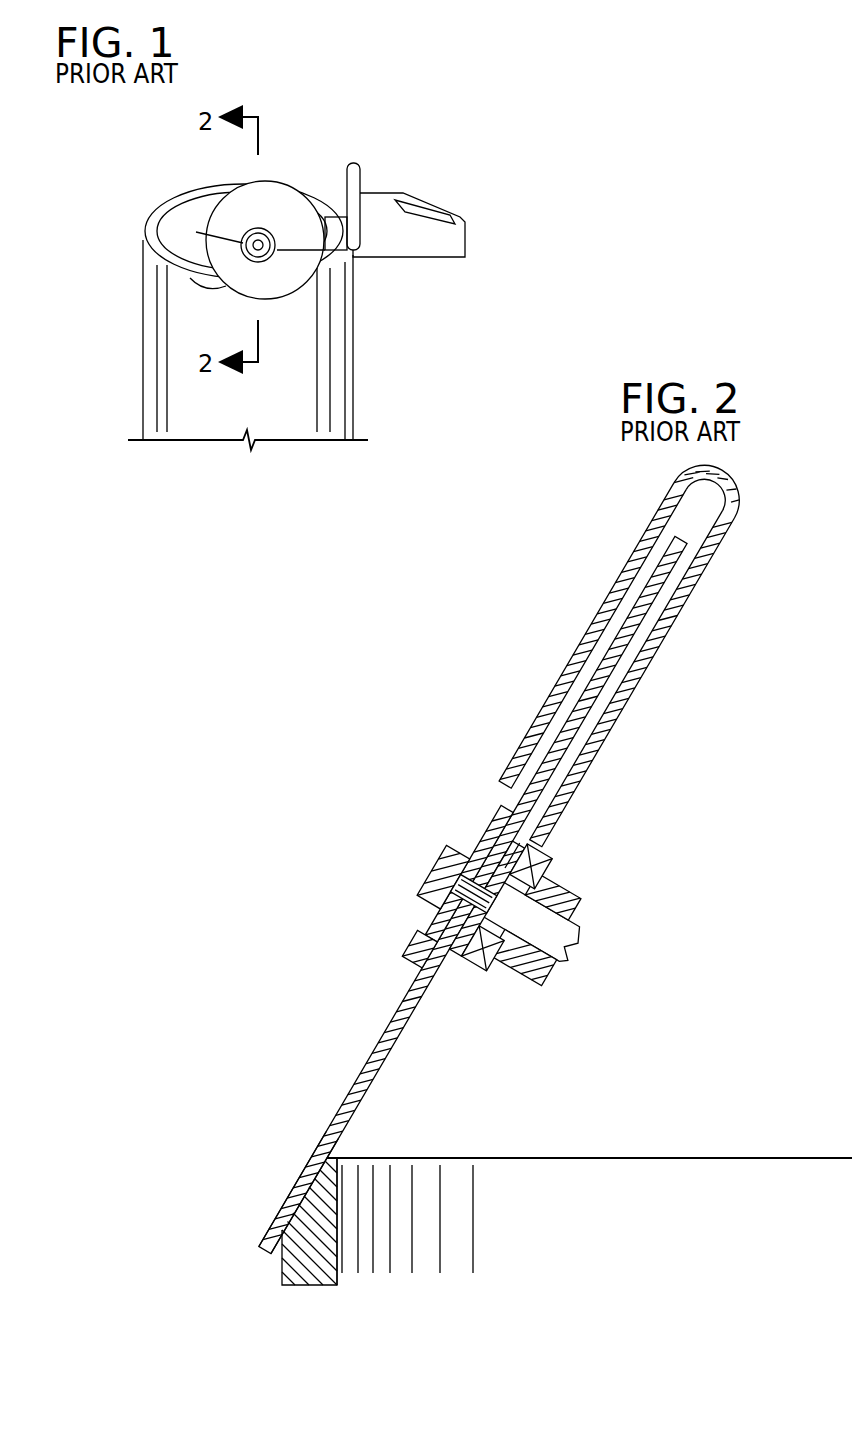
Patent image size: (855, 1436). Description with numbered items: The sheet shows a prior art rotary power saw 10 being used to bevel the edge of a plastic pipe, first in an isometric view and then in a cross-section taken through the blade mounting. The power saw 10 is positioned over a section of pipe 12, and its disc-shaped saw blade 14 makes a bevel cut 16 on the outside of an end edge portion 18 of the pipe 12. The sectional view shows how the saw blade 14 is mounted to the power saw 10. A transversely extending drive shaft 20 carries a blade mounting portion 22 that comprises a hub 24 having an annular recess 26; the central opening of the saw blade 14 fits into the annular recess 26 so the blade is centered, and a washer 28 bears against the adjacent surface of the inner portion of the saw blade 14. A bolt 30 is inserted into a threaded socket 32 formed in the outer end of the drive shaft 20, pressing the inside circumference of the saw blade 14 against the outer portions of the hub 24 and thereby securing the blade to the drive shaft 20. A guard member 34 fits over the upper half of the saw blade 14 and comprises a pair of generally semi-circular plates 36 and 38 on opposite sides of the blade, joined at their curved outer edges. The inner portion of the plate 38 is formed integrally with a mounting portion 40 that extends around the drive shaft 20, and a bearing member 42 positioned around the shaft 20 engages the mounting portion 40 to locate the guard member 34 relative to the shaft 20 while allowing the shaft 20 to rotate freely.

In FIG. 1, the rotary power saw 10 is at (419, 183).
In FIG. 1, the pipe 12 is at (338, 367).
In FIG. 2, the pipe 12 is at (450, 1160).
In FIG. 1, the saw blade 14 is at (282, 275).
In FIG. 2, the saw blade 14 is at (620, 650).
In FIG. 1, the bevel cut 16 is at (210, 282).
In FIG. 2, the bevel cut 16 is at (298, 1200).
In FIG. 1, the end edge portion 18 is at (155, 225).
In FIG. 2, the drive shaft 20 is at (572, 920).
In FIG. 2, the blade mounting portion 22 is at (580, 885).
In FIG. 2, the hub 24 is at (490, 853).
In FIG. 2, the annular recess 26 is at (503, 817).
In FIG. 2, the washer 28 is at (440, 947).
In FIG. 2, the bolt 30 is at (447, 882).
In FIG. 2, the threaded socket 32 is at (545, 970).
In FIG. 2, the guard member 34 is at (684, 630).
In FIG. 2, the plate 36 is at (552, 695).
In FIG. 2, the plate 38 is at (616, 710).
In FIG. 2, the mounting portion 40 is at (548, 858).
In FIG. 2, the bearing member 42 is at (490, 975).